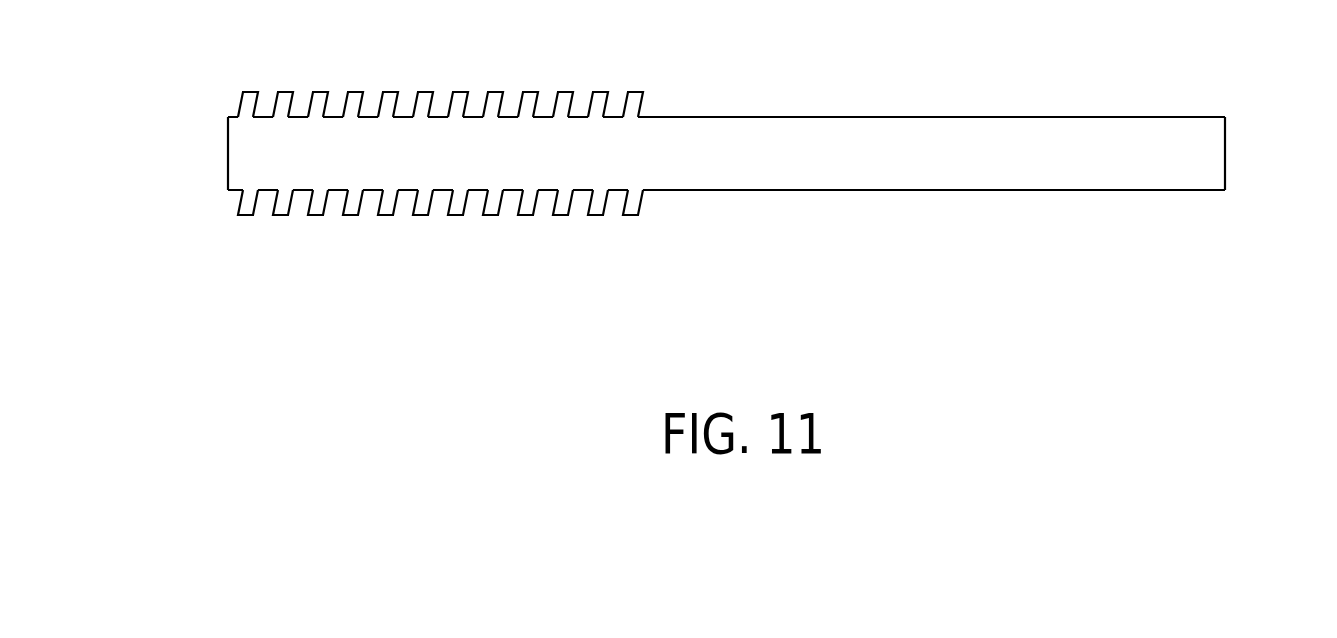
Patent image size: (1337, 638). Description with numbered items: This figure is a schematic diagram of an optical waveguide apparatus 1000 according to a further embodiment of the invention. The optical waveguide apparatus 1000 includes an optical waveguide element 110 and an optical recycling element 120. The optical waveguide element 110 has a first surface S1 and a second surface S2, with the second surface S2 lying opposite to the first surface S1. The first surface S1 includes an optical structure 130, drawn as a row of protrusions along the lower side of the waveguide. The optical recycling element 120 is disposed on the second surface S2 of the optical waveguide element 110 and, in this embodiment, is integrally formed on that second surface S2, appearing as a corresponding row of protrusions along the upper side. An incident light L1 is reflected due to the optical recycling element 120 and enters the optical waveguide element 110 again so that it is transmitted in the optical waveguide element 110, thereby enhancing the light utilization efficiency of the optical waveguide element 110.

The optical waveguide apparatus 1000 is at (1336, 316).
The optical waveguide element 110 is at (763, 156).
The optical recycling element 120 is at (644, 94).
The optical structure 130 is at (214, 183).
The first surface S1 is at (968, 190).
The second surface S2 is at (968, 117).
The incident light L1 is at (435, 117).